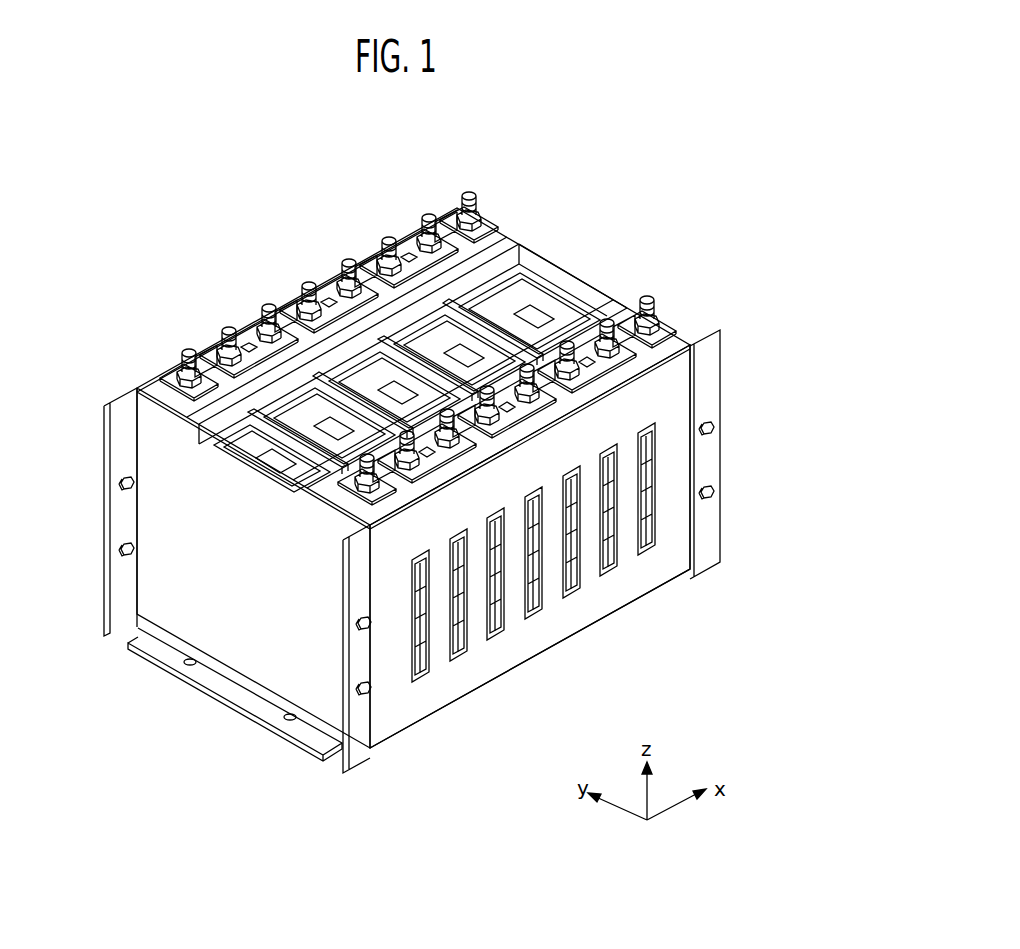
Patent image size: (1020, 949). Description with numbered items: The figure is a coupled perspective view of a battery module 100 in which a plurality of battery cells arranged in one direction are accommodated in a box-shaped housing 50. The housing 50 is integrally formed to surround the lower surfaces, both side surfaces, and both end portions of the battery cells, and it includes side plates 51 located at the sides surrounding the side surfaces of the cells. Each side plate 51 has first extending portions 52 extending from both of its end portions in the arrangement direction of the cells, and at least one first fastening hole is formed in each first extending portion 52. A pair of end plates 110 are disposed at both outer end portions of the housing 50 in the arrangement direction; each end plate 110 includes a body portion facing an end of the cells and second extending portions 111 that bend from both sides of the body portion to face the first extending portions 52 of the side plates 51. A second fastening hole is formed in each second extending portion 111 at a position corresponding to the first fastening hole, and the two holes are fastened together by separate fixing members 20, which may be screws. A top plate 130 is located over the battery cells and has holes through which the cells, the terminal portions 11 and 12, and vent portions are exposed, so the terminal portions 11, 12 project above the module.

The battery module 100 is at (284, 224).
The housing 50 is at (296, 296).
The side plate 51 is at (617, 606).
The first extending portion 52 is at (342, 654).
The end plate 110 is at (160, 583).
The second extending portion 111 is at (130, 513).
The top plate 130 is at (621, 322).
The terminal portion 11 is at (462, 208).
The terminal portion 12 is at (648, 320).
The fixing member 20 is at (121, 549).